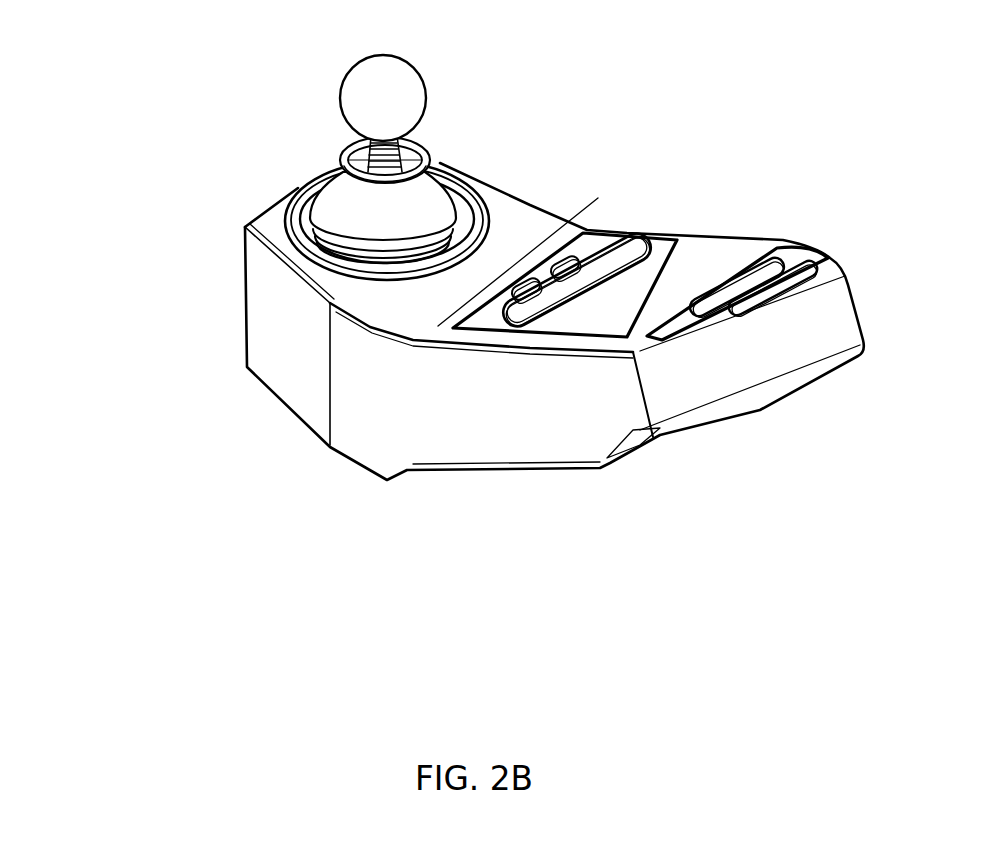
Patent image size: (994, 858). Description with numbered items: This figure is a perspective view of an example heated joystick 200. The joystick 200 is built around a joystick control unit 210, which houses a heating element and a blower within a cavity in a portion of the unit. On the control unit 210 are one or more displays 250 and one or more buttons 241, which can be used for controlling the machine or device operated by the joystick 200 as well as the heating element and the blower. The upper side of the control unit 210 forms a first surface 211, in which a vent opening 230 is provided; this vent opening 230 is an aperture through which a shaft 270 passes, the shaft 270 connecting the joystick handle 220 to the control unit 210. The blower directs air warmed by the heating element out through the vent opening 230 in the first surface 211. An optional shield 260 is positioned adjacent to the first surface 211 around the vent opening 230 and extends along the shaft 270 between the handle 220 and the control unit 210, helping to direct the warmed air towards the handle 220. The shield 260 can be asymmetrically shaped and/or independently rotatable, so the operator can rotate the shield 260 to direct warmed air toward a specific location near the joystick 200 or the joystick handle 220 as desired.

The joystick 200 is at (148, 107).
The joystick control unit 210 is at (290, 380).
The first surface 211 is at (497, 213).
The joystick handle 220 is at (397, 73).
The vent opening 230 is at (407, 157).
The buttons 241 is at (630, 234).
The displays 250 is at (703, 253).
The shield 260 is at (307, 190).
The shaft 270 is at (340, 157).